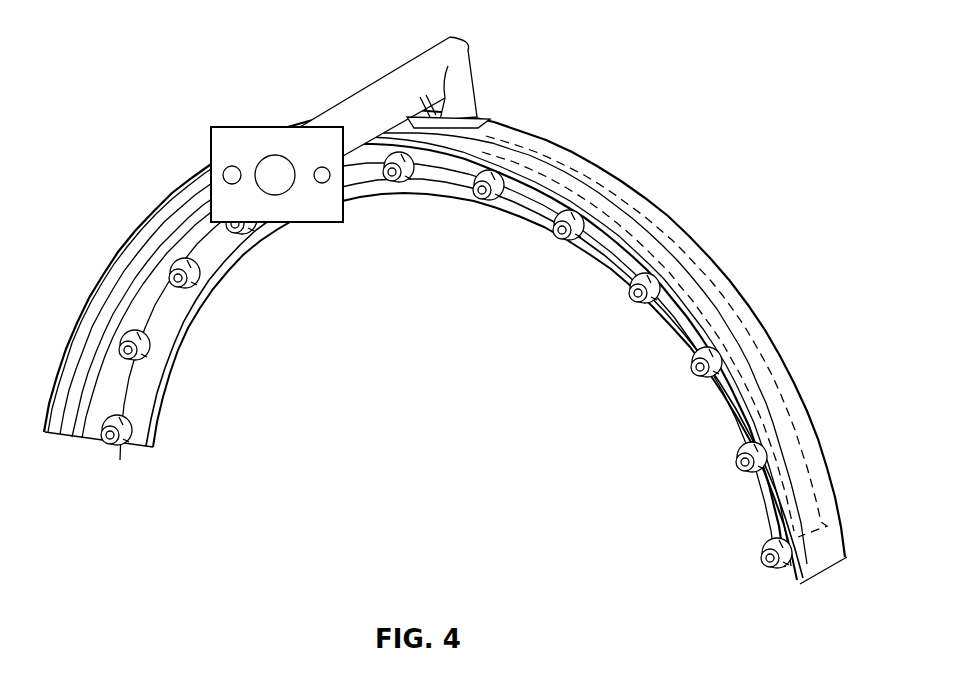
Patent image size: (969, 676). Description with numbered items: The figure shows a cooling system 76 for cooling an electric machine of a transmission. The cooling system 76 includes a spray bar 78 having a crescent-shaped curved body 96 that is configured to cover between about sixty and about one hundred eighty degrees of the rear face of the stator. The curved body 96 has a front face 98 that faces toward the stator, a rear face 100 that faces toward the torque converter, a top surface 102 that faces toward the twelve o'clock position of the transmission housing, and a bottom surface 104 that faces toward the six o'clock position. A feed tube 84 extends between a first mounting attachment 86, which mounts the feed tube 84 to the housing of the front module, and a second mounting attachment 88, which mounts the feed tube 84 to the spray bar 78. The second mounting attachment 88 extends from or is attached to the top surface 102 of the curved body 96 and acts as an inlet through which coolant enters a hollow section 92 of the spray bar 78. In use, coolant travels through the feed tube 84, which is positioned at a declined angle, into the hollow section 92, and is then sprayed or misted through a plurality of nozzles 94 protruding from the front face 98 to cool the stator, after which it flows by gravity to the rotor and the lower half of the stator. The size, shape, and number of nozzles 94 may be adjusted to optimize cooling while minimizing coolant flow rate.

The cooling system 76 is at (334, 122).
The spray bar 78 is at (449, 307).
The feed tube 84 is at (378, 92).
The first mounting attachment 86 is at (225, 150).
The second mounting attachment 88 is at (456, 50).
The hollow section 92 is at (662, 233).
The nozzles 94 is at (125, 440).
The curved body 96 is at (732, 271).
The front face 98 is at (768, 505).
The rear face 100 is at (773, 338).
The top surface 102 is at (562, 150).
The bottom surface 104 is at (242, 256).